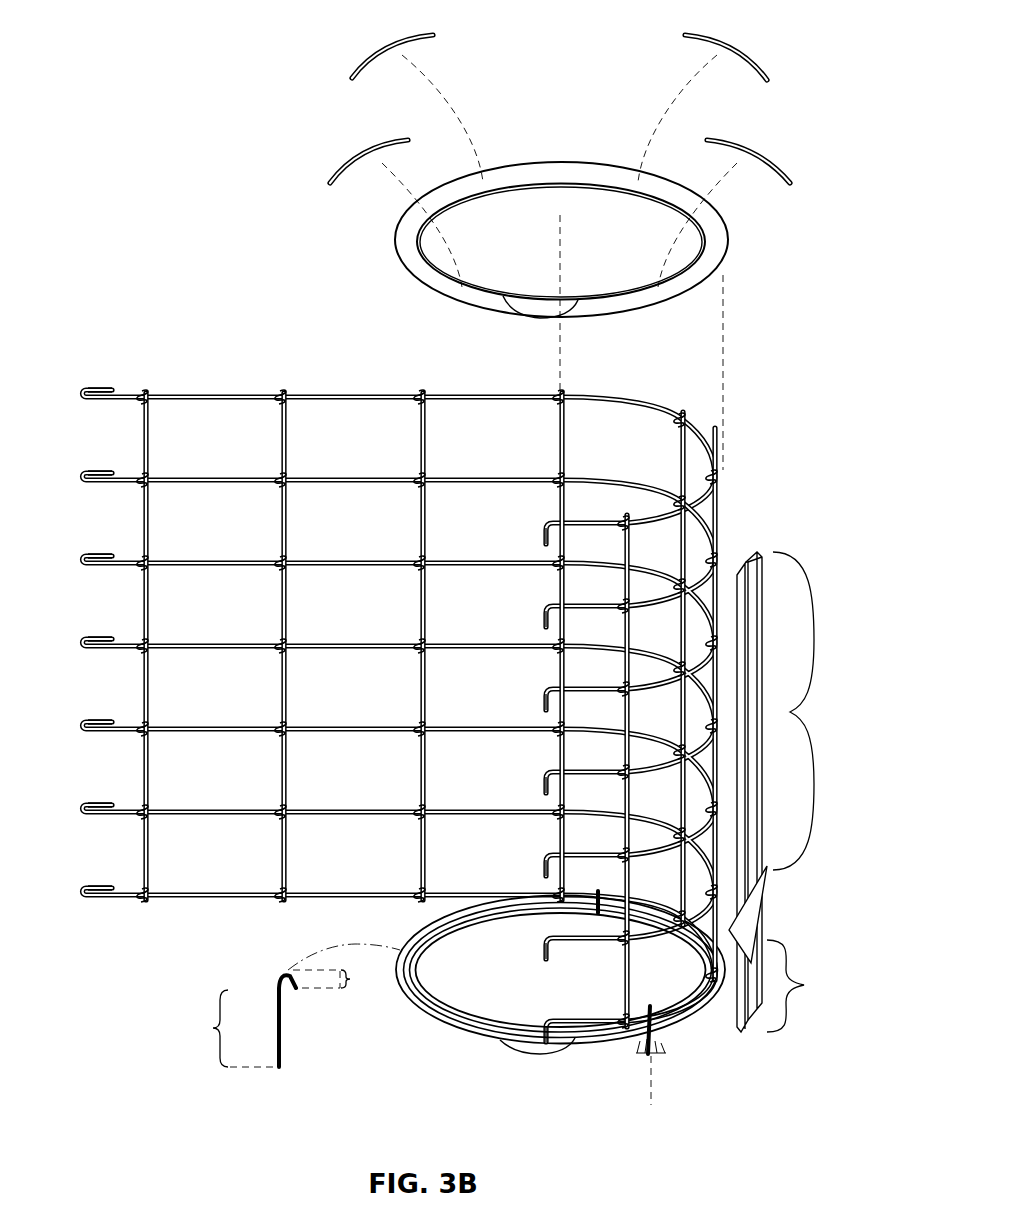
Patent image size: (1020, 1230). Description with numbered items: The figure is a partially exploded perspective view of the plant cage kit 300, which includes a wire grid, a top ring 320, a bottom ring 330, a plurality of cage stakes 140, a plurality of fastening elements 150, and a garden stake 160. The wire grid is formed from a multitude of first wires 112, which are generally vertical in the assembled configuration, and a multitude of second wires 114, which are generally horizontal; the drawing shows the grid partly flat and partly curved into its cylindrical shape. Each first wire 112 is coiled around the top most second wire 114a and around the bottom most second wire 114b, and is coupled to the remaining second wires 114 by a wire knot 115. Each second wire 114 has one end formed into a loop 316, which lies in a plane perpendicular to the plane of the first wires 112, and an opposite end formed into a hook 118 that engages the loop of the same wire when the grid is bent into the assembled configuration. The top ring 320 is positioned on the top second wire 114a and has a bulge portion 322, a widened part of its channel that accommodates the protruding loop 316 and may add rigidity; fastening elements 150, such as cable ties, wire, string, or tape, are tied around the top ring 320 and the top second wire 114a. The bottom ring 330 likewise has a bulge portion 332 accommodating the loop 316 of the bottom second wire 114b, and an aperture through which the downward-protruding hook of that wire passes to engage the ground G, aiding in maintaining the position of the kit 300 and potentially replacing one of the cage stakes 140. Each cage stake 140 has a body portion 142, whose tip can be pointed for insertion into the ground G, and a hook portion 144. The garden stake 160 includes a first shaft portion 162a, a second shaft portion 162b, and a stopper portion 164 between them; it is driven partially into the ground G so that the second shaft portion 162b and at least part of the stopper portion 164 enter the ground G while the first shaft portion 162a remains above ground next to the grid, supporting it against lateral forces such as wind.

The plant cage kit 300 is at (158, 1082).
The top ring 320 is at (531, 170).
The bulge portion 322 is at (527, 290).
The fastening elements 150 is at (362, 68).
The first wires 112 is at (280, 428).
The second wires 114 is at (357, 475).
The top most second wire 114a is at (485, 395).
The bottom most second wire 114b is at (357, 890).
The wire knot 115 is at (291, 478).
The hook 118 is at (542, 531).
The loop 316 is at (88, 386).
The cage stake 140 is at (593, 896).
The body portion 142 is at (222, 1028).
The hook portion 144 is at (352, 979).
The bottom ring 330 is at (488, 1026).
The bulge portion 332 is at (531, 1060).
The garden stake 160 is at (748, 562).
The first shaft portion 162a is at (823, 711).
The second shaft portion 162b is at (820, 986).
The stopper portion 164 is at (748, 912).
The ground G is at (660, 1052).